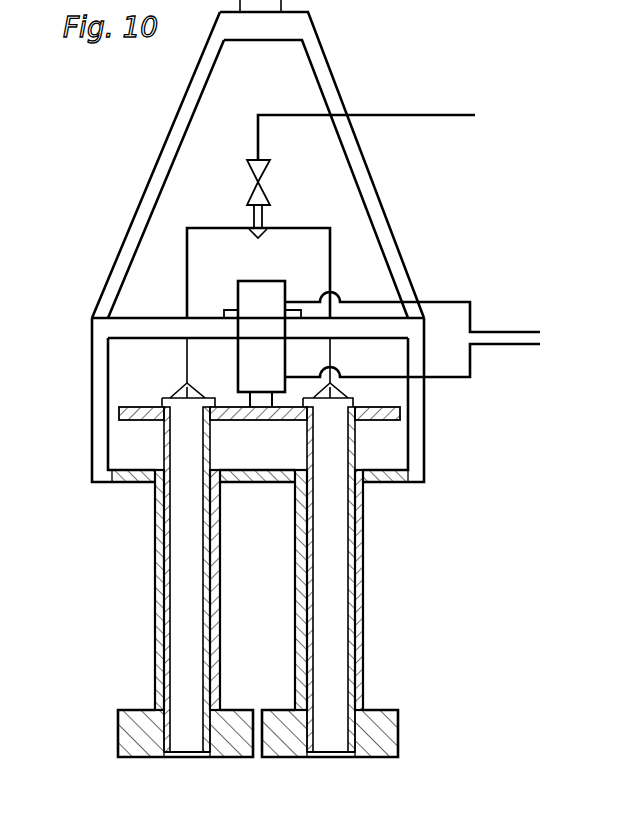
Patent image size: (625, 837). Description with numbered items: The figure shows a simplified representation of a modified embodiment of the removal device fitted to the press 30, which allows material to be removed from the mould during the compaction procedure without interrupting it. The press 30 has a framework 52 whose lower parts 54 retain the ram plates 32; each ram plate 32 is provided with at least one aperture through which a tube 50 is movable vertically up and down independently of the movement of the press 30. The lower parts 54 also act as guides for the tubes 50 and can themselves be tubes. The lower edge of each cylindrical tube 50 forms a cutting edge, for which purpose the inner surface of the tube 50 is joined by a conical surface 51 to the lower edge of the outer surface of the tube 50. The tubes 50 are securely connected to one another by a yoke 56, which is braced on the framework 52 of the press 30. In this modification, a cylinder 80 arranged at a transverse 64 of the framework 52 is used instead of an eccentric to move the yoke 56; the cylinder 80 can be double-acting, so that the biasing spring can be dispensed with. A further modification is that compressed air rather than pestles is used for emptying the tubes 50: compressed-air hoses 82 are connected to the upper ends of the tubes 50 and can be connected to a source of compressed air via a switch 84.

The press 30 is at (173, 146).
The switch 84 is at (262, 191).
The compressed-air hoses 82 is at (258, 273).
The cylinder 80 is at (250, 298).
The transverse 64 is at (154, 333).
The framework 52 is at (106, 382).
The yoke 56 is at (140, 413).
The lower parts of the framework 54 is at (360, 529).
The tube 50 is at (349, 556).
The ram plate 32 is at (380, 712).
The conical surface 51 is at (347, 757).